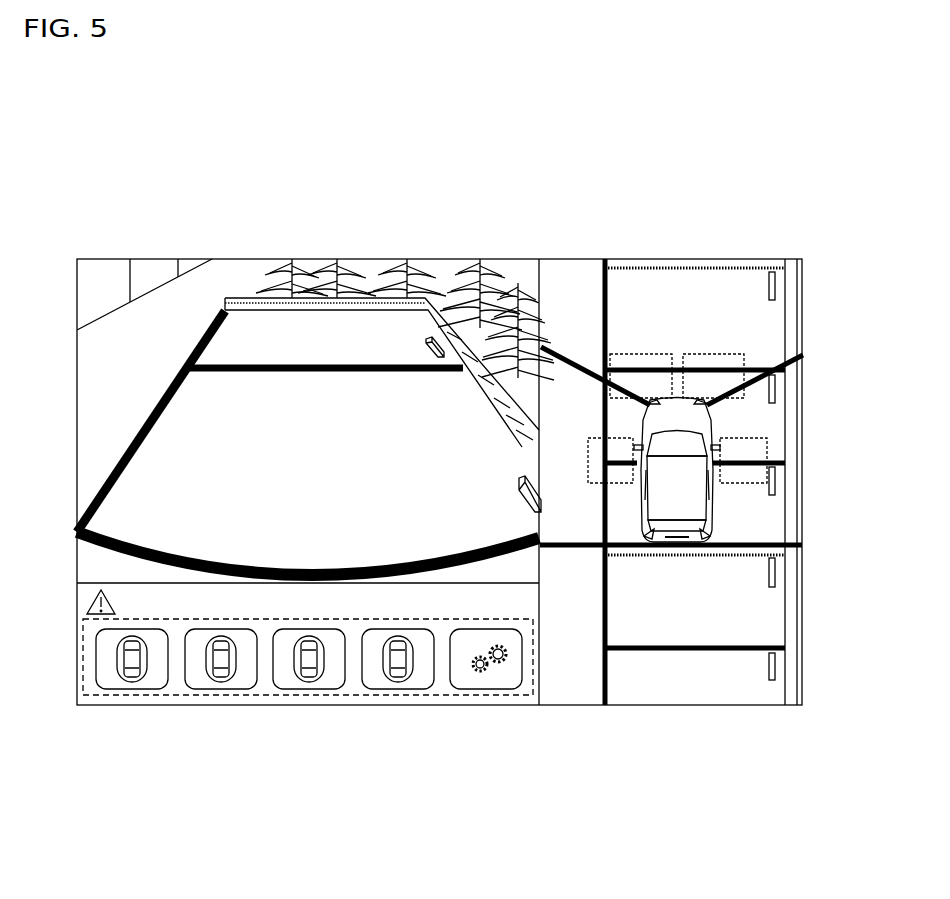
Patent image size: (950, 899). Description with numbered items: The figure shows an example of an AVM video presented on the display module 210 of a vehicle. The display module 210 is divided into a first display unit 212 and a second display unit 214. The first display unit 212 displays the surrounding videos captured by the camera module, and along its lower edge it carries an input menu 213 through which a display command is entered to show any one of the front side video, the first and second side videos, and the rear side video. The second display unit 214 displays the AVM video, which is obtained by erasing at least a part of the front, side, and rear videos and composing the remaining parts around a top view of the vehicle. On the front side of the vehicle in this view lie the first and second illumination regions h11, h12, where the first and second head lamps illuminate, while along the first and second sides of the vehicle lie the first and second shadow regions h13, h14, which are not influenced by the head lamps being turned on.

The display module 210 is at (788, 166).
The first display unit 212 is at (165, 319).
The input menu 213 is at (332, 696).
The second display unit 214 is at (654, 308).
The first illumination region h11 is at (730, 352).
The second illumination region h12 is at (607, 366).
The first shadow region h13 is at (767, 448).
The second shadow region h14 is at (593, 484).